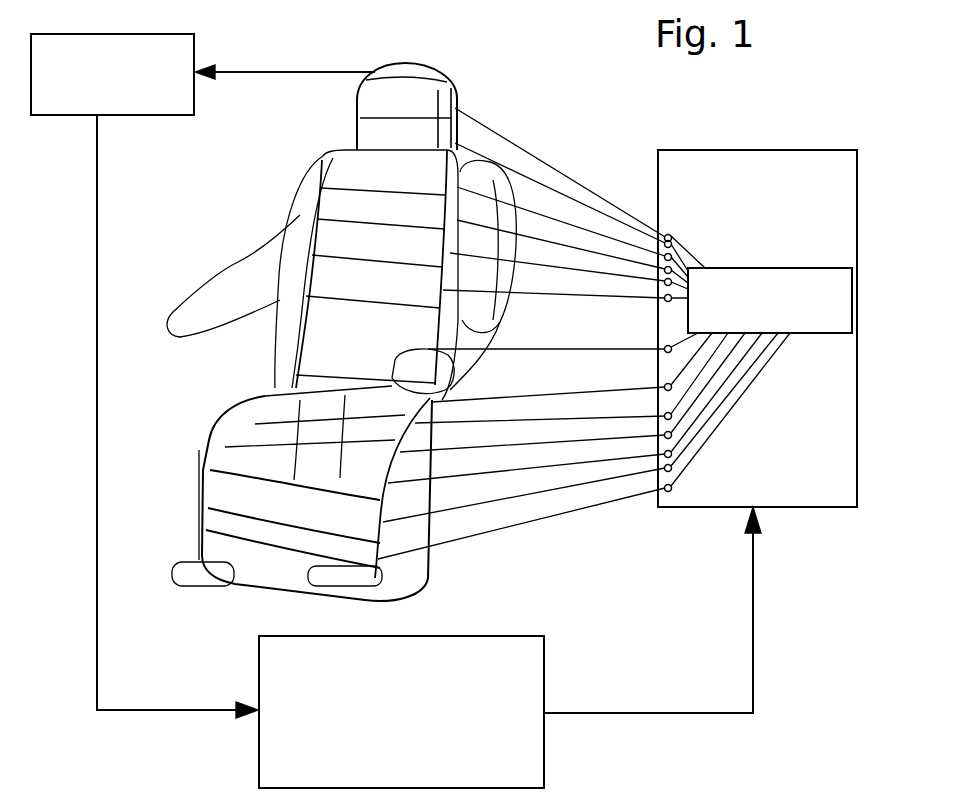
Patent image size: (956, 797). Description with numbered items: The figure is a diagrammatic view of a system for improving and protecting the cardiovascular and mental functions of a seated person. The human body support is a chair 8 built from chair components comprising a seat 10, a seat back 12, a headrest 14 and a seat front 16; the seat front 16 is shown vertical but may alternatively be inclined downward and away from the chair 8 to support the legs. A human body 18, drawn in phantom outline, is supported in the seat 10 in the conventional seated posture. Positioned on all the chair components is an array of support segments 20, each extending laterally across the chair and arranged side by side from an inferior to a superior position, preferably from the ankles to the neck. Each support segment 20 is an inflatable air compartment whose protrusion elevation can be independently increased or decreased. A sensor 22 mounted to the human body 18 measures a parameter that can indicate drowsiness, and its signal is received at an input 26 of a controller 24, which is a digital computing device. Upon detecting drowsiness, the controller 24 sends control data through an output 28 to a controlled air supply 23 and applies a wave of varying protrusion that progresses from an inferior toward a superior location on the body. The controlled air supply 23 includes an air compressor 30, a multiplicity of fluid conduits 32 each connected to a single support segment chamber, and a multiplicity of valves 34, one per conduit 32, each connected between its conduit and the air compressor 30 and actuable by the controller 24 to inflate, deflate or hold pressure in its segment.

The chair 8 is at (447, 557).
The seat 10 is at (220, 405).
The seat back 12 is at (312, 192).
The headrest 14 is at (435, 85).
The seat front 16 is at (203, 483).
The human body 18 is at (230, 262).
The support segments 20 is at (365, 170).
The sensor 22 is at (60, 102).
The controlled air supply 23 is at (773, 160).
The controller 24 is at (513, 687).
The input 26 is at (198, 708).
The output 28 is at (607, 715).
The air compressor 30 is at (837, 323).
The fluid conduits 32 is at (580, 523).
The valves 34 is at (668, 222).